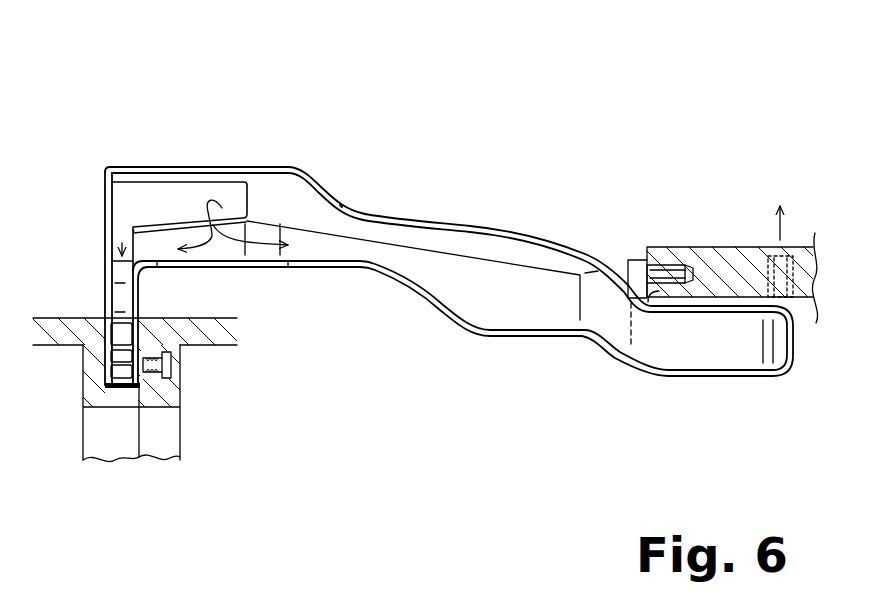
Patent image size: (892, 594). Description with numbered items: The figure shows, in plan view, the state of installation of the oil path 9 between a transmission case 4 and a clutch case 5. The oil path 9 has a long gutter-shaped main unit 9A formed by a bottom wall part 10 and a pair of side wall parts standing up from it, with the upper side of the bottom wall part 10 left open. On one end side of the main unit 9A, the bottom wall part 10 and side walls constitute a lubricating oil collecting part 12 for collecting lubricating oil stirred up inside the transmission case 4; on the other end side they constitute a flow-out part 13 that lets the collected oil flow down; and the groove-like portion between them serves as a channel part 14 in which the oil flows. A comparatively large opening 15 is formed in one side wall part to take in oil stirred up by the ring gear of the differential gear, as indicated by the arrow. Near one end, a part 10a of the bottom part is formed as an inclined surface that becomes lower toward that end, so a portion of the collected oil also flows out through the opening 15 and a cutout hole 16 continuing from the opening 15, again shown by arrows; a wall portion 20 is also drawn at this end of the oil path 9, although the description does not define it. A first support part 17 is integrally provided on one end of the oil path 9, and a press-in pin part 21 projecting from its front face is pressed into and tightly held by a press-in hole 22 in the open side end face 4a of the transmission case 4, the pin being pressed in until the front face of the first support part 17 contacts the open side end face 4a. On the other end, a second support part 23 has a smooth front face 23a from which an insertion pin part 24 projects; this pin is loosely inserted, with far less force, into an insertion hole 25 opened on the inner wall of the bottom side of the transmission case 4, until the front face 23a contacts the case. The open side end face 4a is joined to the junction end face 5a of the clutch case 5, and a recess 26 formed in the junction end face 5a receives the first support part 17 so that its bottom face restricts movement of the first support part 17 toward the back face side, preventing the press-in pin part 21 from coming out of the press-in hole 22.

The oil path 9 is at (481, 87).
The main unit 9A is at (406, 203).
The bottom wall part 10 is at (480, 235).
The inclined surface part of the bottom part 10a is at (220, 250).
The lubricating oil collecting part 12 is at (175, 158).
The flow-out part 13 is at (792, 340).
The channel part 14 is at (511, 272).
The opening 15 is at (190, 195).
The cutout hole 16 is at (150, 250).
The first support part 17 is at (88, 428).
The side wall 20 is at (105, 208).
The press-in pin part 21 is at (170, 374).
The press-in hole 22 is at (168, 362).
The second support part 23 is at (636, 262).
The front face of the second support part 23a is at (662, 300).
The insertion pin part 24 is at (670, 264).
The insertion hole 25 is at (695, 266).
The recess 26 is at (105, 358).
The transmission case 4 is at (167, 443).
The open side end face 4a is at (138, 442).
The clutch case 5 is at (88, 395).
The junction end face 5a is at (110, 389).